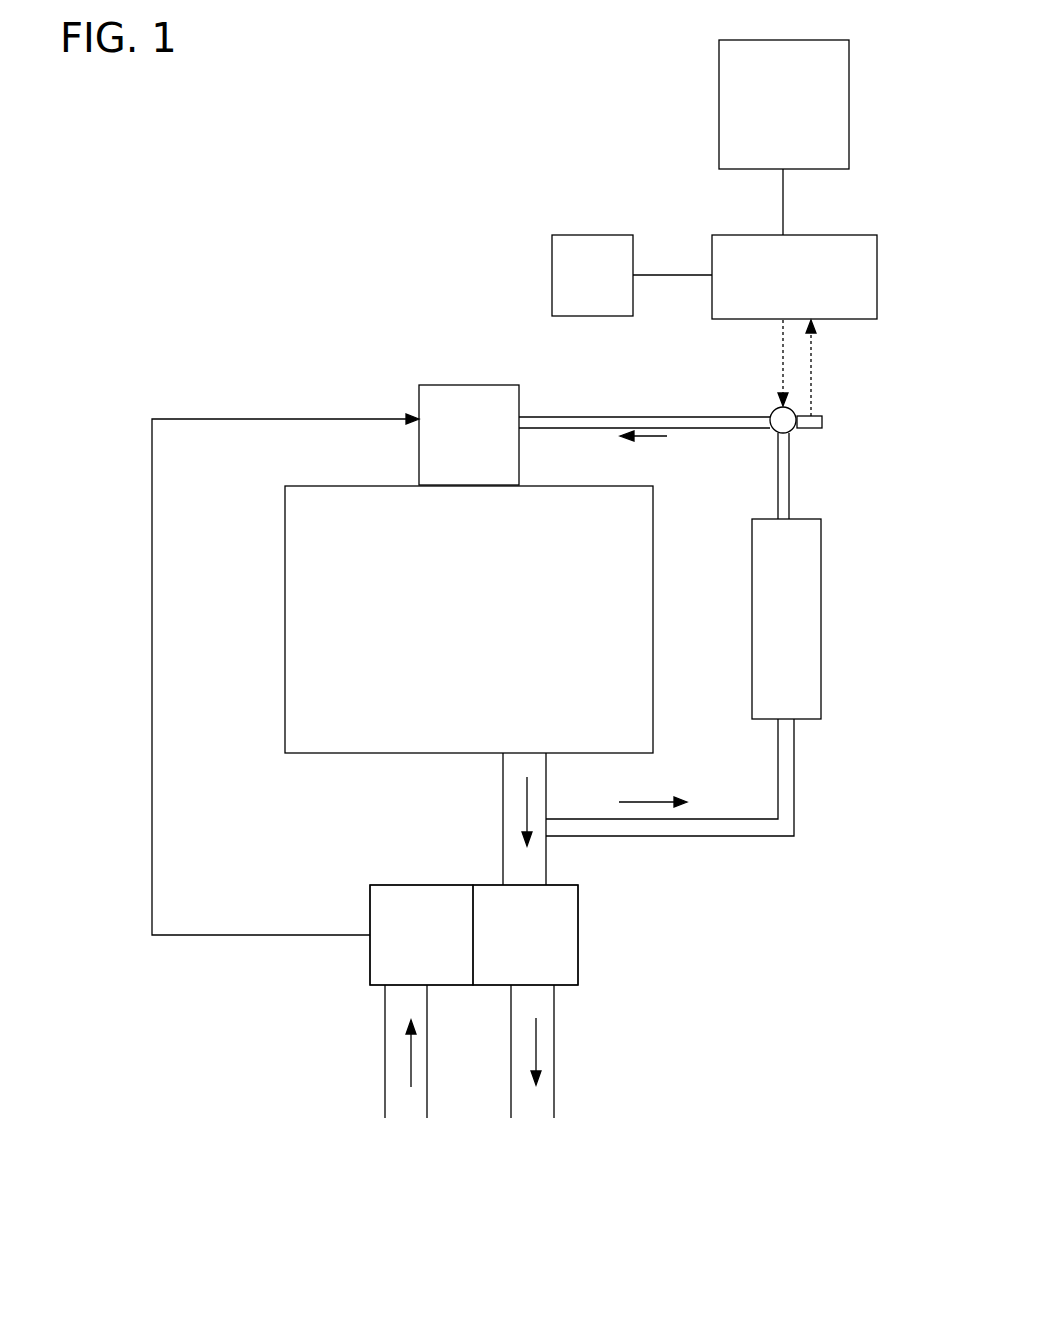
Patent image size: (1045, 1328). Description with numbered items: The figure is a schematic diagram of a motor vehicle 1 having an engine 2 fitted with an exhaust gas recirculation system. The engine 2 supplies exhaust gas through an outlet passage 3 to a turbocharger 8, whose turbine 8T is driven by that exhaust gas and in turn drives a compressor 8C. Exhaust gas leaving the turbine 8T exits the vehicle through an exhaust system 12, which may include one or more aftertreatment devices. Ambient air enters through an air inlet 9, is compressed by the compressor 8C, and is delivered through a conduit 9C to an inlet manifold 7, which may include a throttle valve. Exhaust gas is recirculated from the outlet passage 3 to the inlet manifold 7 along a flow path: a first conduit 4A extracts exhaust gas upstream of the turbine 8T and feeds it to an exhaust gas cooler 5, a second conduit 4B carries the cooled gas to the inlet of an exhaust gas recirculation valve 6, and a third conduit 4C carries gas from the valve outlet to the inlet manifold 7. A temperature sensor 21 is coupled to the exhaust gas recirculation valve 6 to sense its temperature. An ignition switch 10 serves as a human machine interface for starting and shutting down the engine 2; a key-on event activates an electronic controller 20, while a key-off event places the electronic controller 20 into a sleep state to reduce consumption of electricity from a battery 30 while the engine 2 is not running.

The motor vehicle 1 is at (232, 116).
The engine 2 is at (475, 631).
The outlet passage 3 is at (503, 777).
The first conduit 4A is at (700, 837).
The second conduit 4B is at (777, 496).
The third conduit 4C is at (586, 416).
The exhaust gas cooler 5 is at (793, 631).
The exhaust gas recirculation valve 6 is at (775, 408).
The inlet manifold 7 is at (476, 446).
The turbocharger 8 is at (620, 917).
The compressor 8C is at (433, 950).
The turbine 8T is at (541, 950).
The air inlet 9 is at (385, 1052).
The conduit 9C is at (252, 936).
The ignition switch 10 is at (606, 287).
The exhaust system 12 is at (554, 1043).
The electronic controller 20 is at (808, 288).
The temperature sensor 21 is at (822, 421).
The battery 30 is at (798, 115).